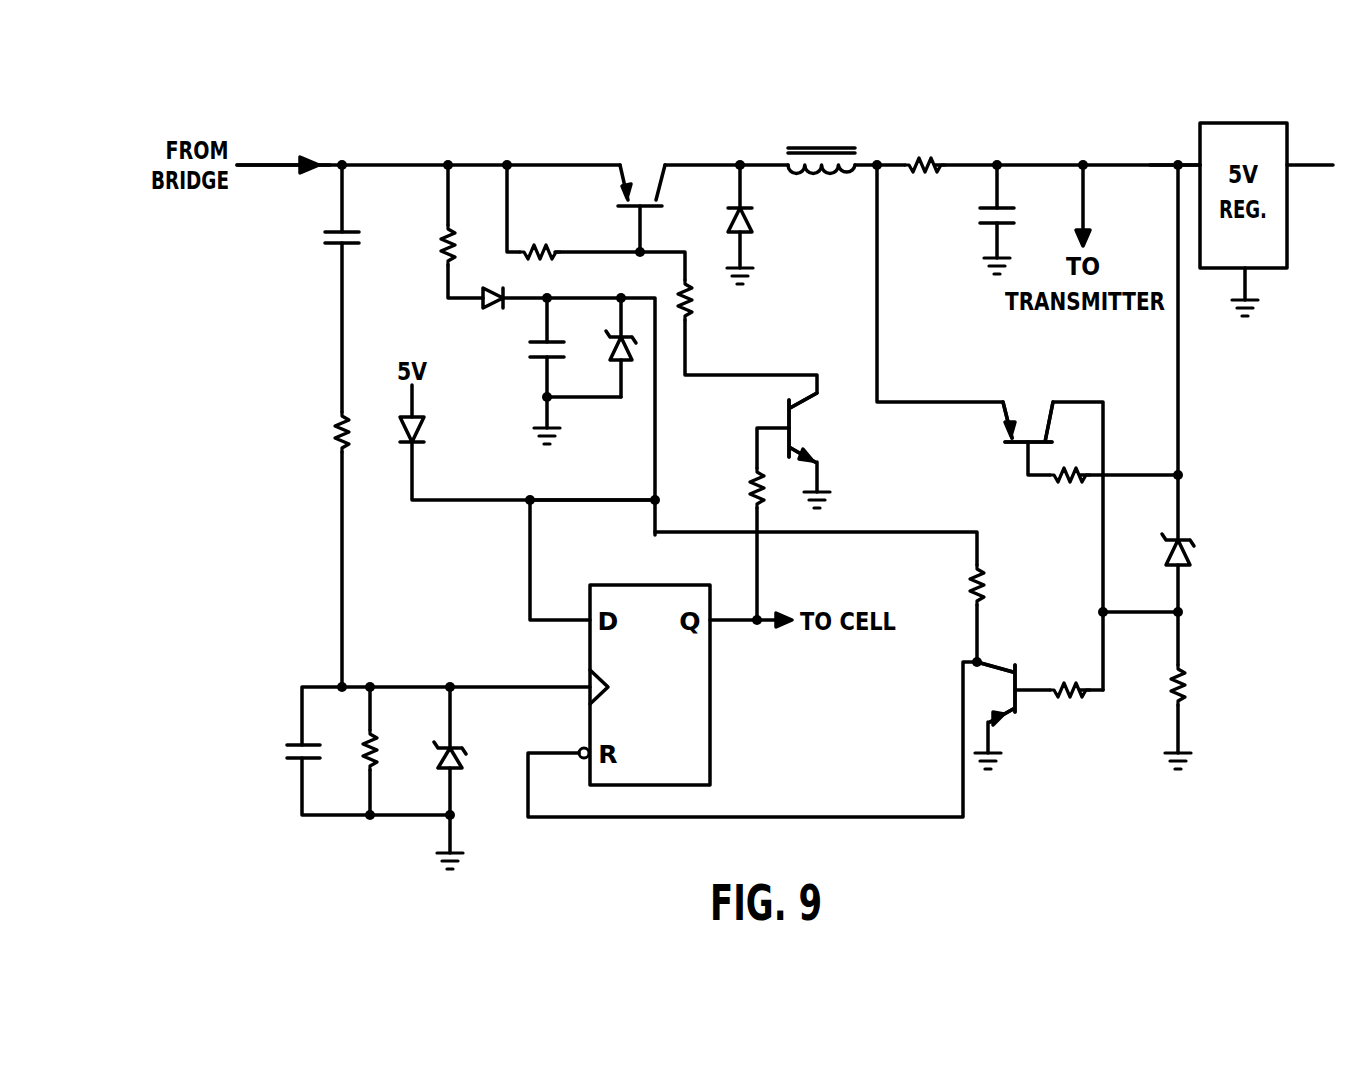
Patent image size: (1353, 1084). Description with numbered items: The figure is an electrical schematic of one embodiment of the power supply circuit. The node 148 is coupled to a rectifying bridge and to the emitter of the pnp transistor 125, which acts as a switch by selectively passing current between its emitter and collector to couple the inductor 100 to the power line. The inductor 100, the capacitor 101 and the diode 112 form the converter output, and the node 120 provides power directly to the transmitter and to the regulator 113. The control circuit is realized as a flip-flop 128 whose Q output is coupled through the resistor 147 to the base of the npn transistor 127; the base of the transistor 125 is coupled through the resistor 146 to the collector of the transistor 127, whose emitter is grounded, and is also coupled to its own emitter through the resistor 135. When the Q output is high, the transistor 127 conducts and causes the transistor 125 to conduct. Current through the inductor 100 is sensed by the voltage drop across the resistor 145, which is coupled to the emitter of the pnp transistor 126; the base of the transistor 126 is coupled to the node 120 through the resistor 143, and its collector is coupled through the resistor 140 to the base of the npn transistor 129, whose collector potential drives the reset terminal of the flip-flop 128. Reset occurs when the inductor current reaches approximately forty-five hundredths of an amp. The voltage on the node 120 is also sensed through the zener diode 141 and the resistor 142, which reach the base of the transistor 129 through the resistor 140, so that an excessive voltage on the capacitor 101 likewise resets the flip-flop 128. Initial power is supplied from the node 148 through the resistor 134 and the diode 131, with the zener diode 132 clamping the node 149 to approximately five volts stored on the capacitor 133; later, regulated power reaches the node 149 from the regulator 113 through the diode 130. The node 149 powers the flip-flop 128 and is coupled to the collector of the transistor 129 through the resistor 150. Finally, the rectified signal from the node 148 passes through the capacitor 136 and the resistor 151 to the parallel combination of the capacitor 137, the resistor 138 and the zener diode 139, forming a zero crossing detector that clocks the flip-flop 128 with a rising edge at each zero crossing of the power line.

The node 148 is at (279, 162).
The capacitor 136 is at (325, 240).
The resistor 151 is at (337, 432).
The resistor 134 is at (443, 243).
The resistor 135 is at (538, 246).
The pnp transistor 125 is at (632, 178).
The resistor 146 is at (697, 300).
The diode 112 is at (750, 238).
The inductor 100 is at (813, 178).
The resistor 145 is at (910, 160).
The capacitor 101 is at (1010, 216).
The node 120 is at (1174, 162).
The regulator 113 is at (1278, 270).
The diode 131 is at (483, 304).
The diode 130 is at (420, 422).
The capacitor 133 is at (557, 367).
The zener diode 132 is at (640, 348).
The resistor 147 is at (752, 490).
The npn transistor 127 is at (820, 425).
The pnp transistor 126 is at (1013, 415).
The resistor 143 is at (1062, 488).
The zener diode 141 is at (1190, 548).
The resistor 140 is at (1058, 682).
The resistor 142 is at (1190, 682).
The npn transistor 129 is at (1018, 712).
The resistor 150 is at (968, 597).
The node 149 is at (588, 503).
The flip-flop 128 is at (712, 722).
The capacitor 137 is at (288, 750).
The resistor 138 is at (378, 757).
The zener diode 139 is at (458, 772).